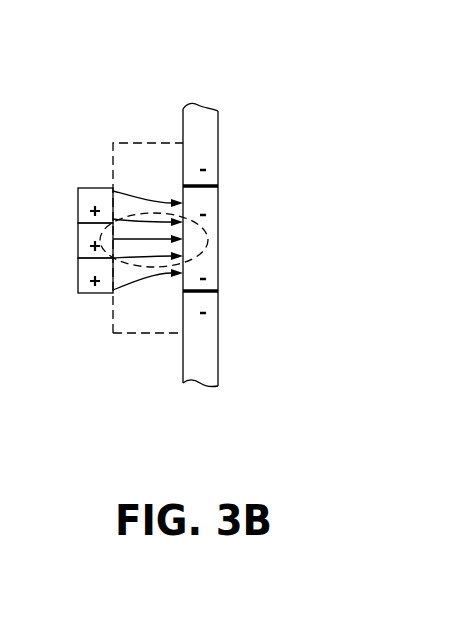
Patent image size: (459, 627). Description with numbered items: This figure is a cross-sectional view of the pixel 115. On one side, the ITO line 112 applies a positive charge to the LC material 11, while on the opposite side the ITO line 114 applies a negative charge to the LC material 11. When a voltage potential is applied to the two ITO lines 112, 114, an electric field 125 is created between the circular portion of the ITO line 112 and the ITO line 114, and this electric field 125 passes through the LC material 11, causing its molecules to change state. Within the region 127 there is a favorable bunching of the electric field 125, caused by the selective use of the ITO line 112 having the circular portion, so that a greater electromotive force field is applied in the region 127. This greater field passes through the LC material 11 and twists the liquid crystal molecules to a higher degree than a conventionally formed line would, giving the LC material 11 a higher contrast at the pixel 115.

The pixel 115 is at (104, 25).
The LC material 11 is at (148, 143).
The ITO line 112 is at (78, 205).
The ITO line 114 is at (218, 130).
The electric field 125 is at (140, 278).
The region 127 is at (216, 237).